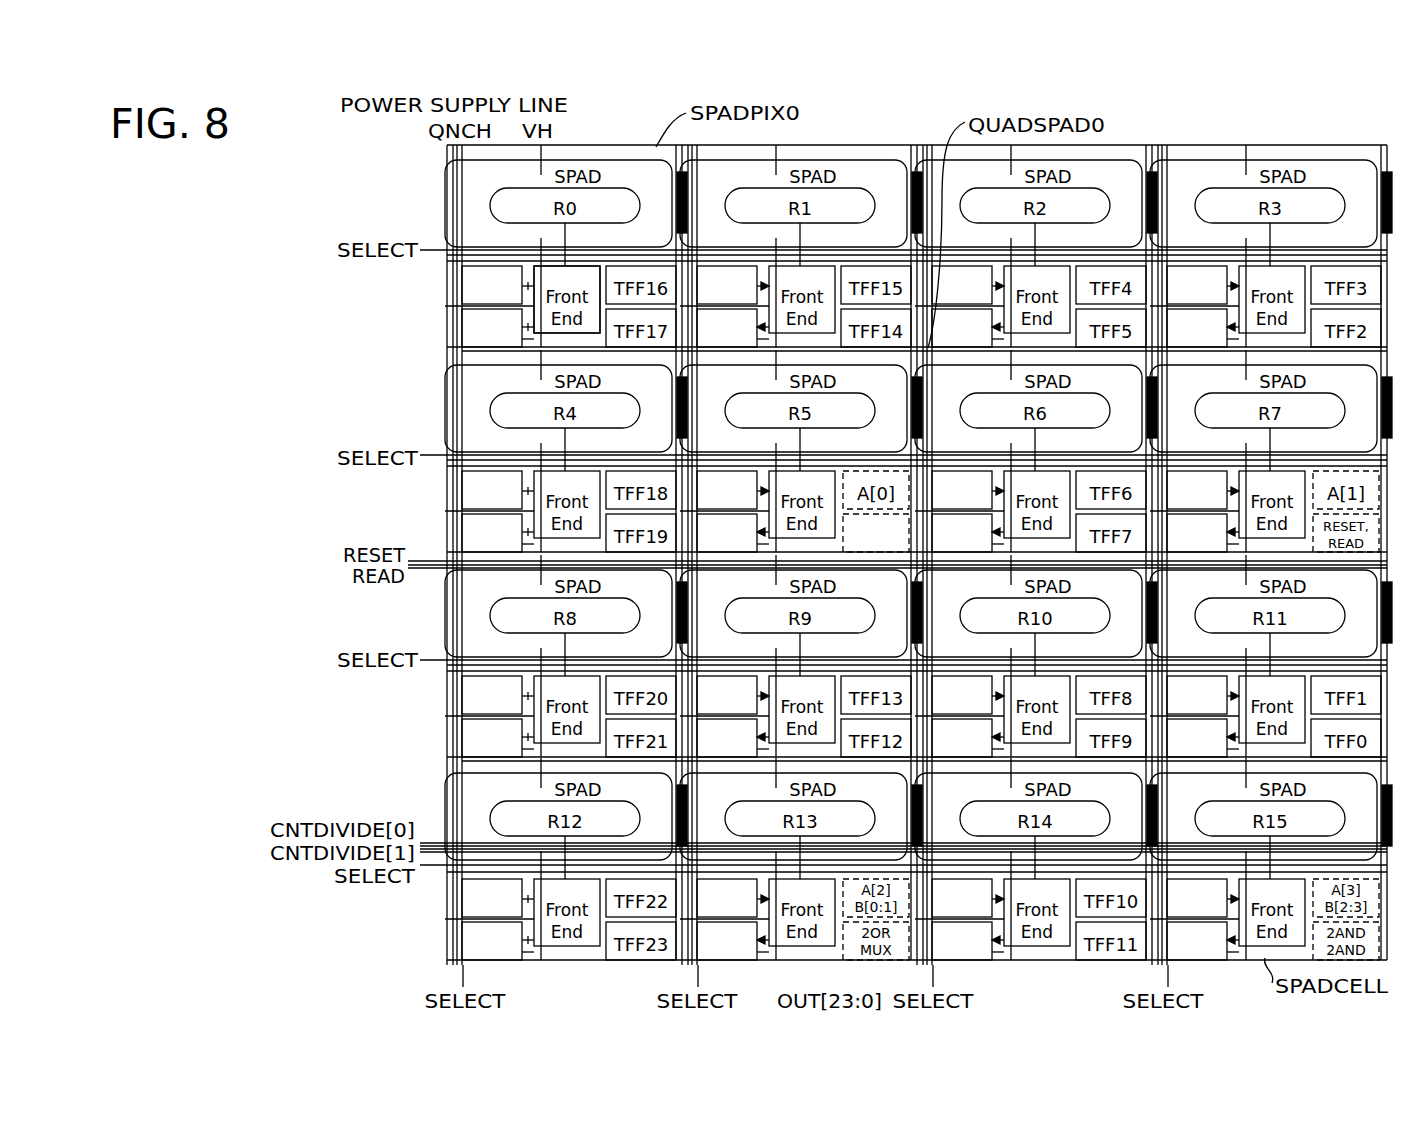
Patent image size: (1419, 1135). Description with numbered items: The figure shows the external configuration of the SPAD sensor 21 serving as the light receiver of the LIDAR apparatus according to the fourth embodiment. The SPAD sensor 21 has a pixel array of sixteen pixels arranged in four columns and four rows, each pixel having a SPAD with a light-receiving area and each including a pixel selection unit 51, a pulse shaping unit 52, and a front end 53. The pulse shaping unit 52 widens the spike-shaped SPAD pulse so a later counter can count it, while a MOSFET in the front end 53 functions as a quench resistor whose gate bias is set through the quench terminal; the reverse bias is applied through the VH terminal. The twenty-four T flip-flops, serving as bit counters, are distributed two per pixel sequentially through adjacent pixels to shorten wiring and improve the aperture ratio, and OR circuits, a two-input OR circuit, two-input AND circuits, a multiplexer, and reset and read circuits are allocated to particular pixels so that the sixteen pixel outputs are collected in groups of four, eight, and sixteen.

The SPAD sensor 21 is at (864, 135).
The pixel selection unit 51 is at (492, 285).
The pulse shaping unit 52 is at (490, 332).
The front end 53 is at (593, 273).